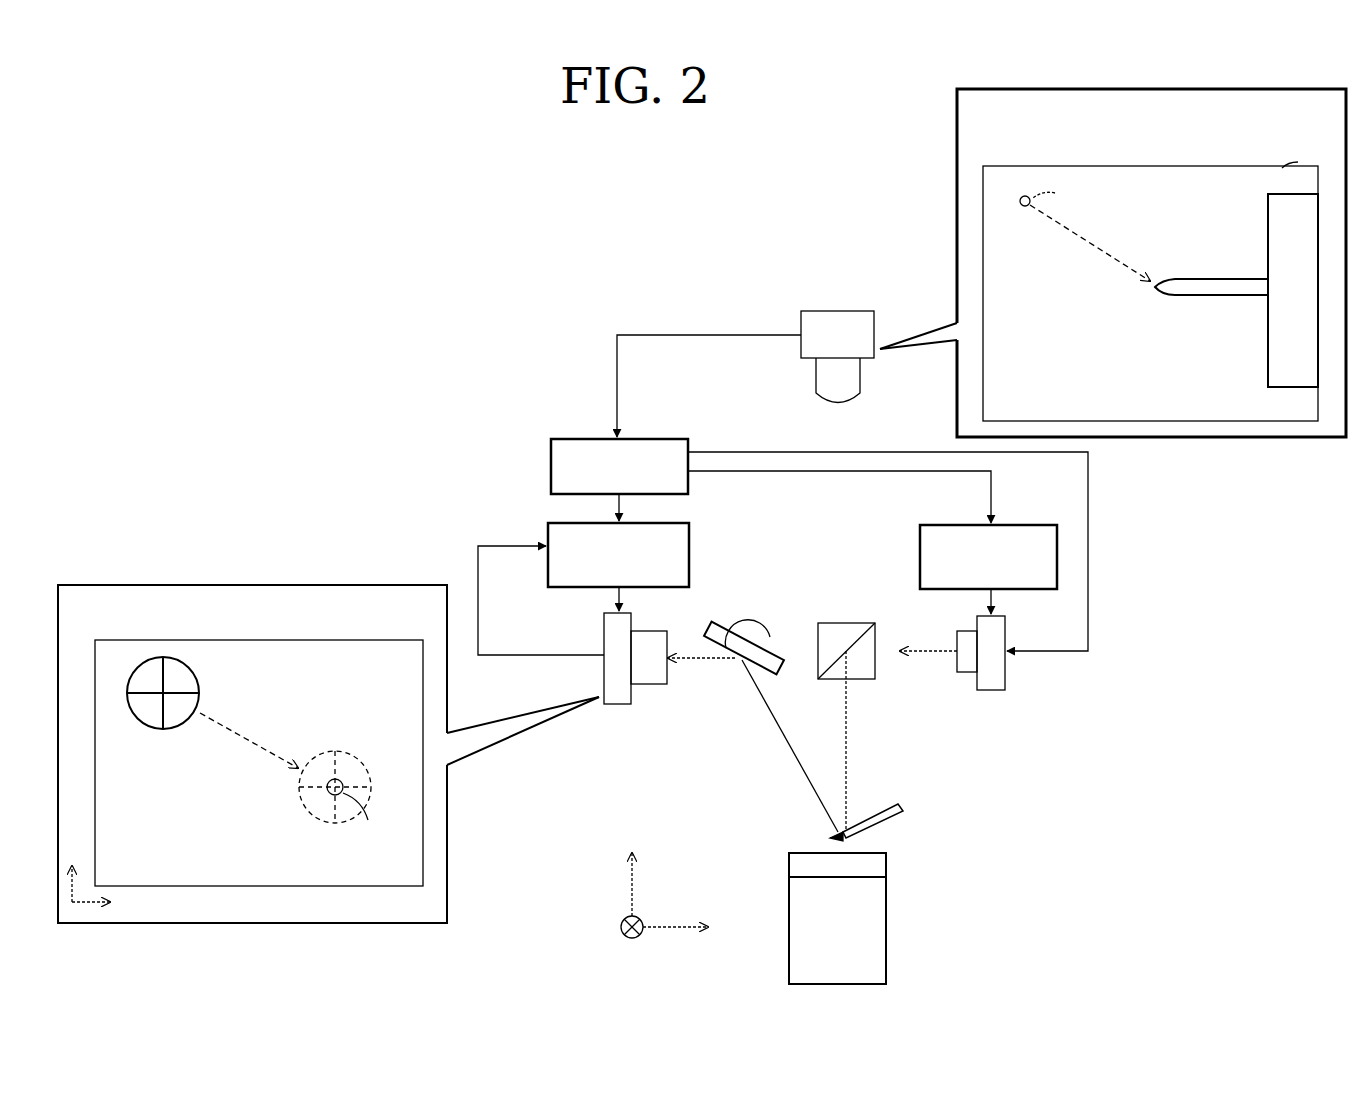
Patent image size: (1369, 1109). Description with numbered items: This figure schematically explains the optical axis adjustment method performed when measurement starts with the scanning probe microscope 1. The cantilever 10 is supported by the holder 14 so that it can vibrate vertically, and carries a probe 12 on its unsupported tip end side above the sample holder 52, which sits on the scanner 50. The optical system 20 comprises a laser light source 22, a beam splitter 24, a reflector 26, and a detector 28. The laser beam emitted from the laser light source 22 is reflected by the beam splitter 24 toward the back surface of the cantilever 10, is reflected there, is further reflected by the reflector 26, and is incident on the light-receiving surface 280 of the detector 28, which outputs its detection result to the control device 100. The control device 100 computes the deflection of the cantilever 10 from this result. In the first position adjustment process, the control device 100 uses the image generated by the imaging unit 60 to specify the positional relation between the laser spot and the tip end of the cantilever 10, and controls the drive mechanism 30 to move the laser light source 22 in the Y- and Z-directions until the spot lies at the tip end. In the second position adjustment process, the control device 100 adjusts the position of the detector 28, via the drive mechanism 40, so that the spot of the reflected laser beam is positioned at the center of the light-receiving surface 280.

The scanning probe microscope 1 is at (556, 300).
The imaging unit 60 is at (817, 311).
The control device 100 is at (647, 441).
The drive mechanism 40 is at (645, 524).
The drive mechanism 30 is at (1018, 524).
The reflector 26 is at (726, 630).
The beam splitter 24 is at (851, 630).
The laser light source 22 is at (1008, 684).
The optical system 20 is at (1031, 720).
The detector 28 is at (619, 706).
The light-receiving surface 280 is at (668, 680).
The cantilever 10 is at (856, 834).
The probe 12 is at (828, 840).
The holder 14 is at (868, 818).
The scanner 50 is at (860, 954).
The sample holder 52 is at (860, 865).